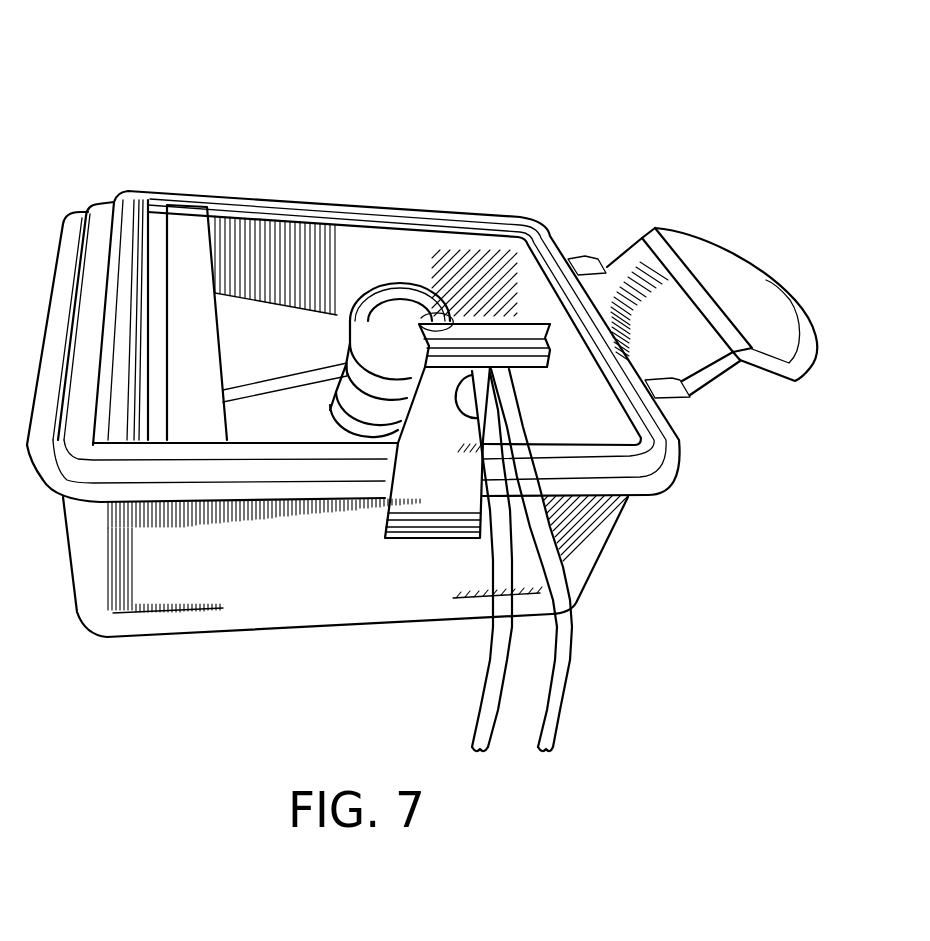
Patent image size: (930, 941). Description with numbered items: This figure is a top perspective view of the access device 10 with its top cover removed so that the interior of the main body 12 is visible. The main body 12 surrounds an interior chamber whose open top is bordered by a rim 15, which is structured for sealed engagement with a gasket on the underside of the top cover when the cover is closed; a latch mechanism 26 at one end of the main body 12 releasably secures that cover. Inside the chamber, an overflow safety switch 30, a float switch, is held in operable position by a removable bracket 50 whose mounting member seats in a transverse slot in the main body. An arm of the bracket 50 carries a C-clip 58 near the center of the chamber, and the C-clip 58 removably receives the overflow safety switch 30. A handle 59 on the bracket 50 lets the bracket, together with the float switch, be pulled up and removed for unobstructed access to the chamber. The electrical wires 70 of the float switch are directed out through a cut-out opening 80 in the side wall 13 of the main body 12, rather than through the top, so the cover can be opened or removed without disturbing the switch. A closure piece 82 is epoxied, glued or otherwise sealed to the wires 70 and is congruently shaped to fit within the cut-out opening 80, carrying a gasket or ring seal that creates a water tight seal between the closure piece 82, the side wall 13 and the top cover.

The access device 10 is at (131, 122).
The main body 12 is at (200, 578).
The side wall 13 is at (310, 562).
The rim 15 is at (460, 217).
The latch mechanism 26 is at (712, 247).
The overflow safety switch 30 is at (380, 293).
The bracket 50 is at (250, 306).
The C-clip 58 is at (352, 297).
The handle 59 is at (186, 215).
The electrical wires 70 is at (493, 653).
The cut-out opening 80 is at (438, 505).
The closure piece 82 is at (523, 360).